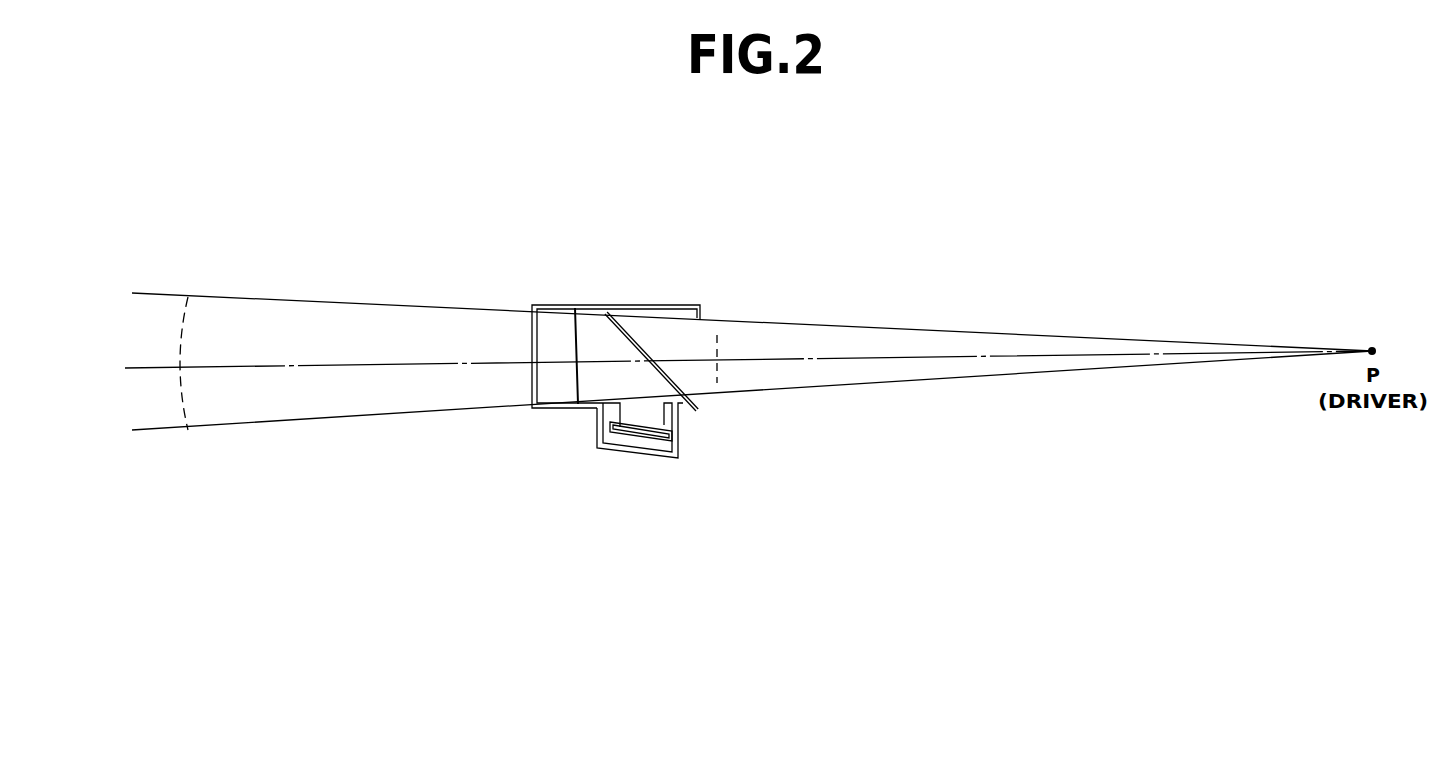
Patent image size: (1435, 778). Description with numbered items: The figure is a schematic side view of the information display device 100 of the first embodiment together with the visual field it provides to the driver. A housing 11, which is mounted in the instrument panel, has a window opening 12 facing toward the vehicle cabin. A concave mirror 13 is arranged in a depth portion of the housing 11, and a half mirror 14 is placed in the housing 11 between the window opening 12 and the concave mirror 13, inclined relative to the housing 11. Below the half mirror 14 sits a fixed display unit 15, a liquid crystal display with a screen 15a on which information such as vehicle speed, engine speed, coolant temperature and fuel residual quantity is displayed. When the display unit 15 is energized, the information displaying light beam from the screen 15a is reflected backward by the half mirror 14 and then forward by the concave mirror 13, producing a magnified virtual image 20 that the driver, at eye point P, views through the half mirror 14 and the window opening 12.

The information display device 100 is at (985, 158).
The housing 11 is at (673, 305).
The window opening 12 is at (702, 346).
The concave mirror 13 is at (575, 340).
The half mirror 14 is at (624, 340).
The fixed display unit 15 is at (687, 473).
The screen 15a is at (656, 418).
The magnified virtual image 20 is at (186, 319).